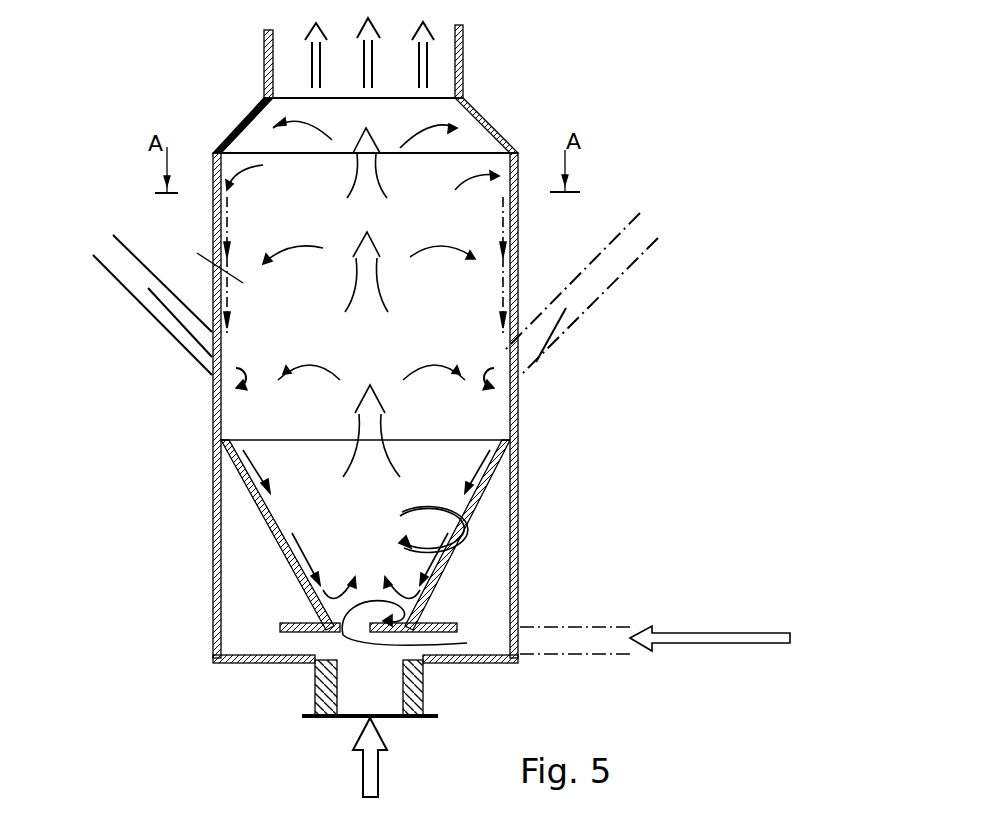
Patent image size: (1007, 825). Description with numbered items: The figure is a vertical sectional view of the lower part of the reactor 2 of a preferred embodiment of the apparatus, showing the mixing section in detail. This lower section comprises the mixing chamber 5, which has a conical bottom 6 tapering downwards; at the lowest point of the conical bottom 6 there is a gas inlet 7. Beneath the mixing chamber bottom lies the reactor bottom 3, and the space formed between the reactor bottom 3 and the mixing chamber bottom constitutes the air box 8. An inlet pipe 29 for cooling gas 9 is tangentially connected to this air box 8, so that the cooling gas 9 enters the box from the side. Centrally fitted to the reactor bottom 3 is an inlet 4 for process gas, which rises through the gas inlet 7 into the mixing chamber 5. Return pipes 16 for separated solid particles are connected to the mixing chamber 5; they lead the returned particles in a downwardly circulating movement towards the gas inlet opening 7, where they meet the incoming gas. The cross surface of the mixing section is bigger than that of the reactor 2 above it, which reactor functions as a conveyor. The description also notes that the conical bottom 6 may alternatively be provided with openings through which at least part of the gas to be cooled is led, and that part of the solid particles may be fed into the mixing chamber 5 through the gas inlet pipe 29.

The reactor 2 is at (505, 117).
The reactor bottom 3 is at (255, 663).
The inlet for process gas 4 is at (363, 688).
The mixing chamber 5 is at (242, 421).
The conical bottom 6 is at (500, 503).
The gas inlet 7 is at (340, 641).
The air box 8 is at (235, 583).
The cooling gas 9 is at (712, 635).
The return pipes 16 is at (118, 272).
The inlet pipe 29 is at (580, 645).